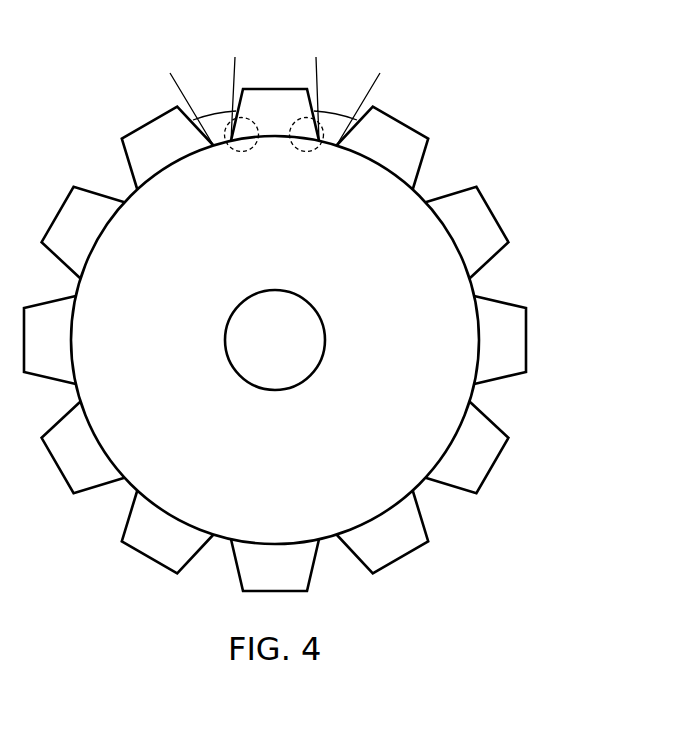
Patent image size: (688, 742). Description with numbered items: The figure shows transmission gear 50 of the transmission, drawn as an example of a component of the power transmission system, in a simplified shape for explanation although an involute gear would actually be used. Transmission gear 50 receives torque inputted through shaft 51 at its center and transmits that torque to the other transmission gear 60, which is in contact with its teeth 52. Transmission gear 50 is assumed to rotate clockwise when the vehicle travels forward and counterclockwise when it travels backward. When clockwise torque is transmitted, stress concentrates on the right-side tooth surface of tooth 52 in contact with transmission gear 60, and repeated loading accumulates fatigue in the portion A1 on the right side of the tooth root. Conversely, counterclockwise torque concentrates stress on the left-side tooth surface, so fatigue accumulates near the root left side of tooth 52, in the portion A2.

The transmission gear 50 is at (455, 383).
The shaft 51 is at (310, 356).
The tooth 52 is at (280, 102).
The transmission gear 60 is at (193, 88).
The portion A1 is at (307, 152).
The portion A2 is at (240, 152).